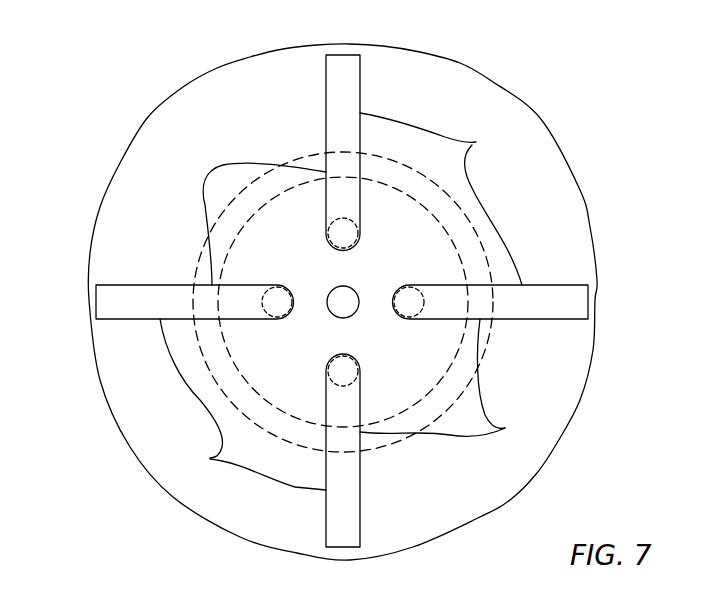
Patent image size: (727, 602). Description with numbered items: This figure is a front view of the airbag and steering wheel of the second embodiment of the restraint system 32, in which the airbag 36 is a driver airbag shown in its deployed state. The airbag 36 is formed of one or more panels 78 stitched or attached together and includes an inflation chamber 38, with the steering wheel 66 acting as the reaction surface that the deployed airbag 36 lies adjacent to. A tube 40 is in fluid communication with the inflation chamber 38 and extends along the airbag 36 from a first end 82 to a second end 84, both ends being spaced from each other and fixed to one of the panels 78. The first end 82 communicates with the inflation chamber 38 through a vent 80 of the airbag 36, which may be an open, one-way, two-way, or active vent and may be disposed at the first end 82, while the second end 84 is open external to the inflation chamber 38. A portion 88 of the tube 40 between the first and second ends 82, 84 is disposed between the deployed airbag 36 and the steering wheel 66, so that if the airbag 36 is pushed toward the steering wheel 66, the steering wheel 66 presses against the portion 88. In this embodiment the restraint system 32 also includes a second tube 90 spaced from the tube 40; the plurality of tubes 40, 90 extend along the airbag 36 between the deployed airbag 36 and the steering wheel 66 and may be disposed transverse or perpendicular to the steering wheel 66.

The restraint system 32 is at (100, 88).
The airbag 36 is at (103, 193).
The inflation chamber 38 is at (125, 247).
The tube 40 is at (140, 319).
The steering wheel 66 is at (490, 347).
The panel 78 is at (540, 117).
The vent 80 is at (298, 292).
The first end 82 is at (327, 227).
The second end 84 is at (360, 90).
The portion of the tube 88 is at (223, 165).
The second tube 90 is at (341, 301).